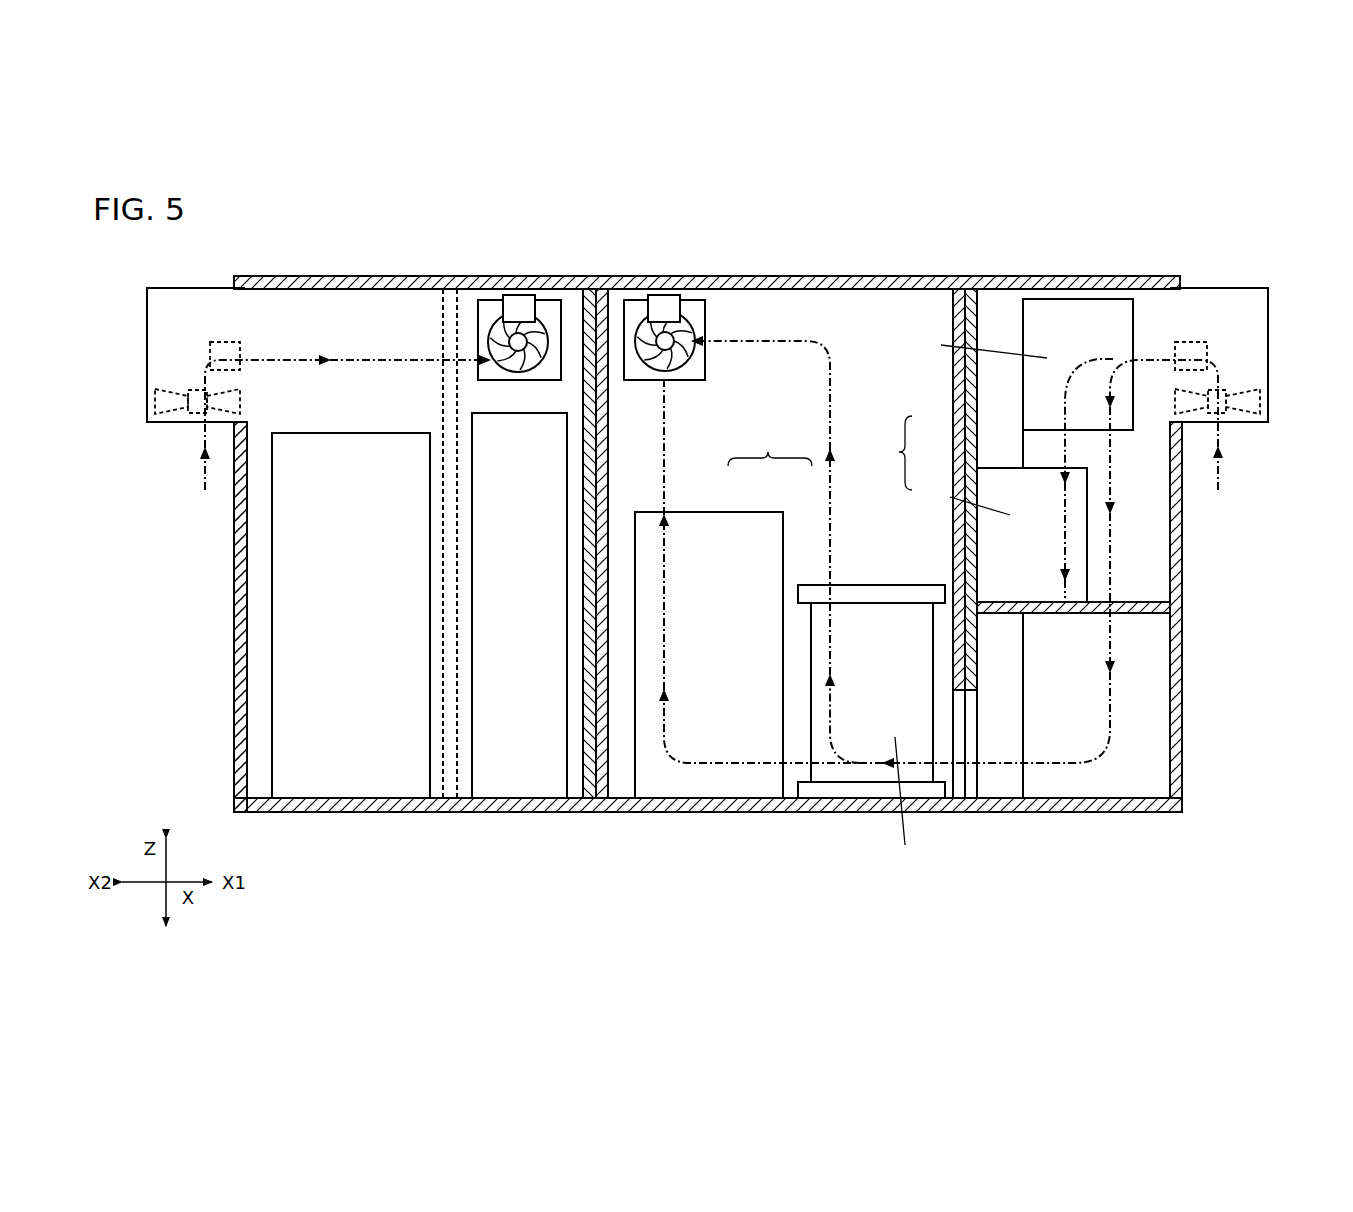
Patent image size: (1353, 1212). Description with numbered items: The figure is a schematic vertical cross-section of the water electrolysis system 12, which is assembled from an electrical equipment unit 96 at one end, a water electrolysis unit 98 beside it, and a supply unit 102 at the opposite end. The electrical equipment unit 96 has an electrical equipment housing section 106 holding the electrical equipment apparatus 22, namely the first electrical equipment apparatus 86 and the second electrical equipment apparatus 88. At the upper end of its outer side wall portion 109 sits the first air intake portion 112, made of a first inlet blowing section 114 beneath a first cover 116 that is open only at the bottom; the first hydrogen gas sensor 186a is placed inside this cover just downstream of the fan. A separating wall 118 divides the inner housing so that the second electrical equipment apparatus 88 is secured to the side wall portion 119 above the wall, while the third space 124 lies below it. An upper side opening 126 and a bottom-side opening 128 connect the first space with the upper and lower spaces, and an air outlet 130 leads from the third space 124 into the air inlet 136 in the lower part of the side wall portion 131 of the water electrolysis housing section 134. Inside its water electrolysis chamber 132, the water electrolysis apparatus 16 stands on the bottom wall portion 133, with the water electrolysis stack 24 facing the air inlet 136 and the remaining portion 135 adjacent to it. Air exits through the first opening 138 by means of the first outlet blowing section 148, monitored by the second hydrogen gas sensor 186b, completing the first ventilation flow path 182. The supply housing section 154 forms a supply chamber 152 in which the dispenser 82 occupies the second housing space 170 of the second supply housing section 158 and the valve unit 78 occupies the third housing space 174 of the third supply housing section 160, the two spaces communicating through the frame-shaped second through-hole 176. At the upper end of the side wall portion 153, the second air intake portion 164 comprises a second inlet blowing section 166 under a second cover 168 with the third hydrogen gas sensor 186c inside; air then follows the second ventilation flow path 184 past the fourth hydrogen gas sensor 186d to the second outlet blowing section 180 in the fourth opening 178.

The water electrolysis system 12 is at (1110, 222).
The water electrolysis apparatus 16 is at (770, 448).
The electrical equipment apparatus 22 is at (941, 448).
The water electrolysis stack 24 is at (808, 585).
The valve unit 78 is at (516, 783).
The dispenser 82 is at (348, 783).
The first electrical equipment apparatus 86 is at (1032, 410).
The second electrical equipment apparatus 88 is at (983, 478).
The electrical equipment unit 96 is at (1075, 274).
The water electrolysis unit 98 is at (848, 274).
The supply unit 102 is at (372, 274).
The electrical equipment housing section 106 is at (1158, 276).
The side wall portion 109 is at (1183, 540).
The first air intake portion 112 is at (1232, 286).
The first inlet blowing section 114 is at (1248, 405).
The first cover 116 is at (1268, 288).
The separating wall 118 is at (1130, 602).
The side wall portion 119 is at (983, 322).
The third space 124 is at (1145, 725).
The upper side opening 126 is at (1025, 460).
The bottom-side opening 128 is at (1158, 690).
The air outlet 130 is at (975, 695).
The side wall portion 131 is at (952, 327).
The water electrolysis chamber 132 is at (795, 737).
The bottom wall portion 133 is at (712, 801).
The water electrolysis housing section 134 is at (778, 276).
The portion of the water electrolysis apparatus 135 is at (745, 510).
The air inlet 136 is at (960, 717).
The first opening 138 is at (703, 372).
The first outlet blowing section 148 is at (707, 325).
The supply chamber 152 is at (260, 782).
The side wall portion 153 is at (235, 715).
The supply housing section 154 is at (427, 274).
The second supply housing section 158 is at (380, 808).
The third supply housing section 160 is at (535, 813).
The second air intake portion 164 is at (197, 286).
The second inlet blowing section 166 is at (168, 404).
The second cover 168 is at (147, 288).
The second housing space 170 is at (262, 655).
The third housing space 174 is at (585, 806).
The second through-hole 176 is at (428, 778).
The fourth opening 178 is at (558, 365).
The second outlet blowing section 180 is at (504, 386).
The first ventilation flow path 182 is at (1065, 763).
The second ventilation flow path 184 is at (305, 357).
The first hydrogen gas sensor 186a is at (1207, 352).
The second hydrogen gas sensor 186b is at (664, 295).
The third hydrogen gas sensor 186c is at (210, 352).
The fourth hydrogen gas sensor 186d is at (521, 295).